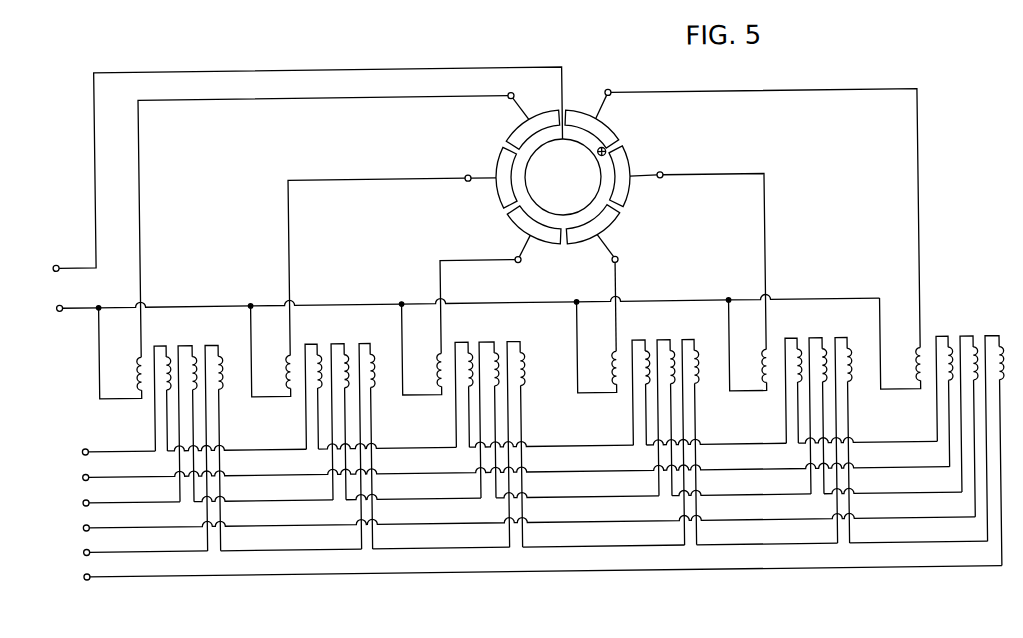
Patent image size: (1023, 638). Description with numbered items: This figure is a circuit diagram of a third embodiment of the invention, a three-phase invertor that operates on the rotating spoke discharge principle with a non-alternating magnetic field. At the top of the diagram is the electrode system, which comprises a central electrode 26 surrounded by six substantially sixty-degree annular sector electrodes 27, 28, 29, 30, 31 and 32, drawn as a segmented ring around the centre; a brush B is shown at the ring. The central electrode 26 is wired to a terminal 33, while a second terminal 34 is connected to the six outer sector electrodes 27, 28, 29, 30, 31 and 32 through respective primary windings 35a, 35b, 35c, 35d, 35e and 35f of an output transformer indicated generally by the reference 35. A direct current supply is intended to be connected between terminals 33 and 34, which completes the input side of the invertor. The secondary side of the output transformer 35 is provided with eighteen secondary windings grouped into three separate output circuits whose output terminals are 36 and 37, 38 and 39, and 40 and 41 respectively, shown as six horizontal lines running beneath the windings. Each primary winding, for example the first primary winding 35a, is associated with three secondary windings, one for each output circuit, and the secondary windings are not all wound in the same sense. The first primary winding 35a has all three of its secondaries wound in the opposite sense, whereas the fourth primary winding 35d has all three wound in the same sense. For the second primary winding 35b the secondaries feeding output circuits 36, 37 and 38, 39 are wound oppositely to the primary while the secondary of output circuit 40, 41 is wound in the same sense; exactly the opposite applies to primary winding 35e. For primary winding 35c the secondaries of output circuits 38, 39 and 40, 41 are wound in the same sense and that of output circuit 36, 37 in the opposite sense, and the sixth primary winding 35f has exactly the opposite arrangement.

The central electrode 26 is at (552, 188).
The annular sector electrode 27 is at (606, 127).
The annular sector electrode 28 is at (626, 193).
The annular sector electrode 29 is at (581, 242).
The annular sector electrode 30 is at (519, 227).
The annular sector electrode 31 is at (497, 162).
The annular sector electrode 32 is at (519, 128).
The brush B is at (606, 151).
The terminal 33 is at (56, 259).
The second terminal 34 is at (60, 305).
The output transformer 35 is at (552, 430).
The first primary winding 35a is at (911, 362).
The second primary winding 35b is at (757, 367).
The primary winding 35c is at (607, 367).
The fourth primary winding 35d is at (432, 367).
The primary winding 35e is at (281, 367).
The sixth primary winding 35f is at (132, 367).
The output terminal 36 is at (494, 446).
The output terminal 37 is at (500, 472).
The output terminal 38 is at (506, 497).
The output terminal 39 is at (513, 522).
The output terminal 40 is at (519, 547).
The output terminal 41 is at (526, 571).